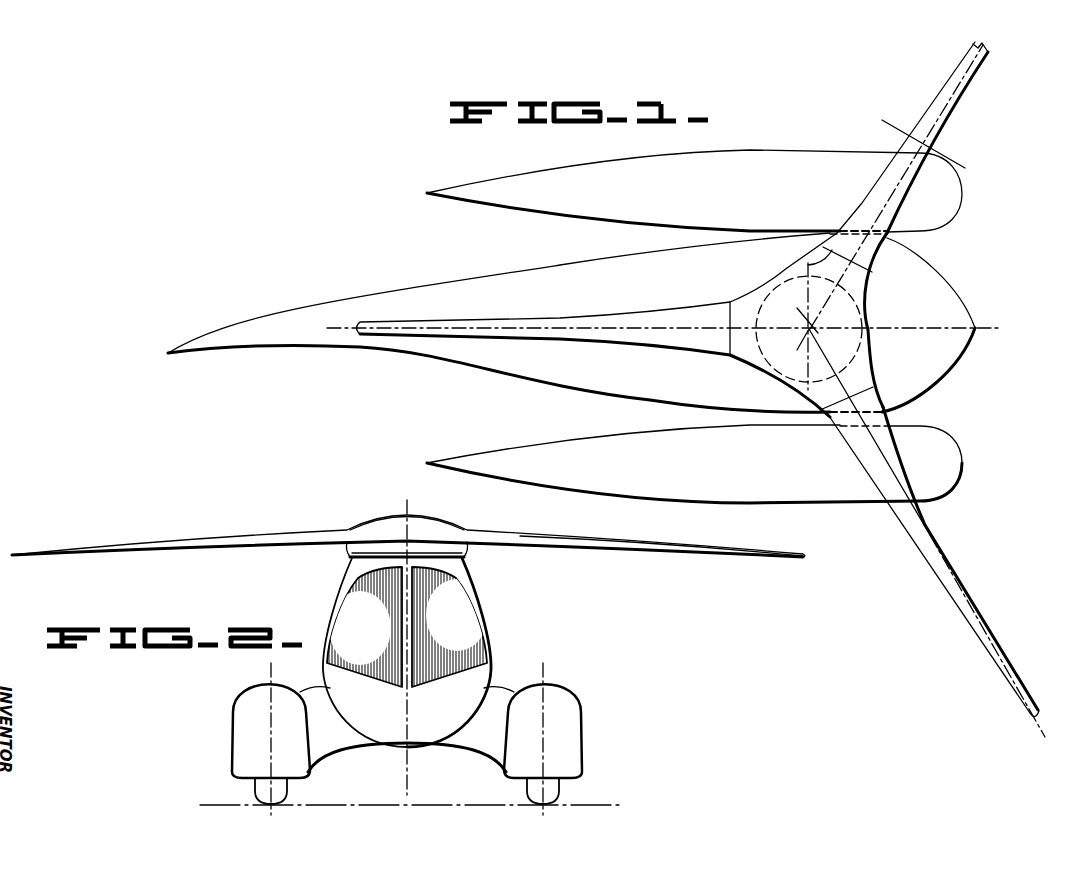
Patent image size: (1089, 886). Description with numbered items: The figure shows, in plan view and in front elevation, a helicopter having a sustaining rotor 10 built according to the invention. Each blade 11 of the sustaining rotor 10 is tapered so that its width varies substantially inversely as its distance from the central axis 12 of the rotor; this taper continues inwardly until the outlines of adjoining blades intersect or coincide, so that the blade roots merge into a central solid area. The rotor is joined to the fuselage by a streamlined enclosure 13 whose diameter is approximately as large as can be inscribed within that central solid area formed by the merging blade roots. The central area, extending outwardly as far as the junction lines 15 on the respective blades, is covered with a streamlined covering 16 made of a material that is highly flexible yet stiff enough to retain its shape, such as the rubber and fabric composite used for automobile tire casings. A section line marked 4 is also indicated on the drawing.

In FIG. 1, the section line 4- 4 is at (882, 120).
In FIG. 1, the sustaining rotor 10 is at (727, 361).
In FIG. 2, the sustaining rotor 10 is at (463, 526).
In FIG. 1, the blade 11 is at (963, 568).
In FIG. 2, the blade 11 is at (569, 538).
In FIG. 1, the central axis 12 is at (812, 326).
In FIG. 2, the central axis 12 is at (407, 512).
In FIG. 1, the streamlined enclosure 13 is at (858, 341).
In FIG. 2, the streamlined enclosure 13 is at (466, 550).
In FIG. 1, the junction lines 15 is at (822, 257).
In FIG. 2, the junction lines 15 is at (447, 530).
In FIG. 1, the streamlined covering 16 is at (872, 303).
In FIG. 2, the streamlined covering 16 is at (367, 530).